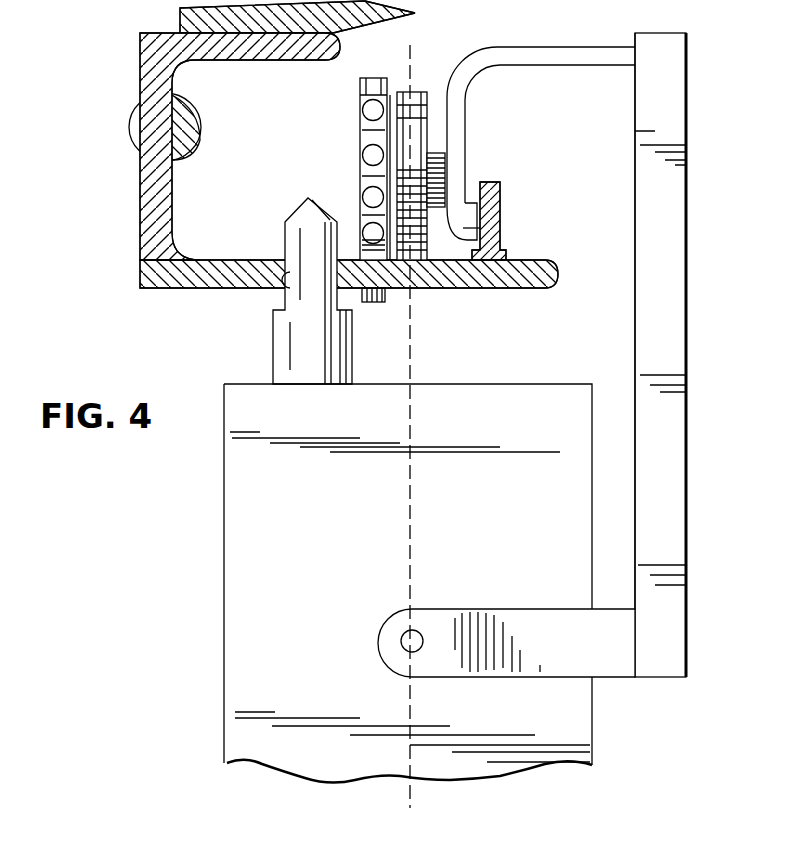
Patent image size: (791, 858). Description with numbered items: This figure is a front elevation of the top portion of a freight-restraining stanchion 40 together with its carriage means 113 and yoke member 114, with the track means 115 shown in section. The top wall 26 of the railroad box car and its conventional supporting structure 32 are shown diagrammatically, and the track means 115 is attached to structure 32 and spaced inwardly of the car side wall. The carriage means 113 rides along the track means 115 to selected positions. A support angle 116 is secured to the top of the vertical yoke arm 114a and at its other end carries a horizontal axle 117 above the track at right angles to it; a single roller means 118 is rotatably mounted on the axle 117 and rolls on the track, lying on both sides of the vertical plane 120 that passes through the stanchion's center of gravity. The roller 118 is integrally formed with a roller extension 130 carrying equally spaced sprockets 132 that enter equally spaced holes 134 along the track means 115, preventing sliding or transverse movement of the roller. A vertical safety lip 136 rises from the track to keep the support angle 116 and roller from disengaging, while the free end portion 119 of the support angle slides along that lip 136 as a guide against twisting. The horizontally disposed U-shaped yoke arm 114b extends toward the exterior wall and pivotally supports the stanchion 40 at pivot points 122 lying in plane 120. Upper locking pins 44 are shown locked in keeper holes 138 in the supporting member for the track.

The top wall 26 is at (178, 18).
The supporting structure 32 is at (140, 68).
The stanchion 40 is at (245, 492).
The upper locking pins 44 is at (308, 200).
The carriage means 113 is at (469, 115).
The yoke member 114 is at (687, 190).
The vertical yoke arm 114a is at (684, 306).
The horizontally disposed yoke arm 114b is at (540, 664).
The track means 115 is at (432, 288).
The support angle 116 is at (590, 47).
The horizontal axle 117 is at (445, 172).
The roller means 118 is at (420, 92).
The free end portion 119 is at (472, 229).
The vertical plane 120 is at (420, 495).
The pivot points 122 is at (402, 645).
The roller extension 130 is at (366, 172).
The sprockets 132 is at (366, 108).
The holes 134 is at (385, 280).
The vertical safety lip 136 is at (495, 200).
The keeper holes 138 is at (288, 283).